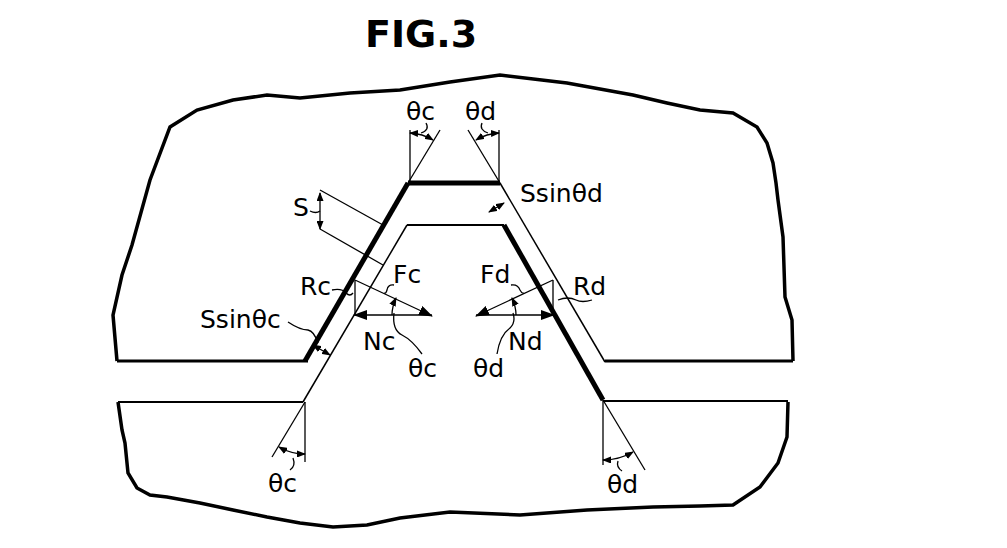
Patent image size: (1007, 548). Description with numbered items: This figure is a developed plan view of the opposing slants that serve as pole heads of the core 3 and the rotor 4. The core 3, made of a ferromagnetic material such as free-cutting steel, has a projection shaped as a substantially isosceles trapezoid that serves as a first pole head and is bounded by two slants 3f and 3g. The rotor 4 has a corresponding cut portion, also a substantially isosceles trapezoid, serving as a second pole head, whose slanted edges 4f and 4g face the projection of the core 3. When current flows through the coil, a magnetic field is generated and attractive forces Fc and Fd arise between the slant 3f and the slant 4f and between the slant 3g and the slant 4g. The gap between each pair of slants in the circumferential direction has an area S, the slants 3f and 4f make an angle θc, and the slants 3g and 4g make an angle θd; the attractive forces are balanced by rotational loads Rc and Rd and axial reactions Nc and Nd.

The core 3 is at (753, 443).
The rotor 4 is at (748, 207).
The slant 3f is at (313, 386).
The slant 3g is at (591, 381).
The slant 4f is at (398, 188).
The slant 4g is at (541, 249).